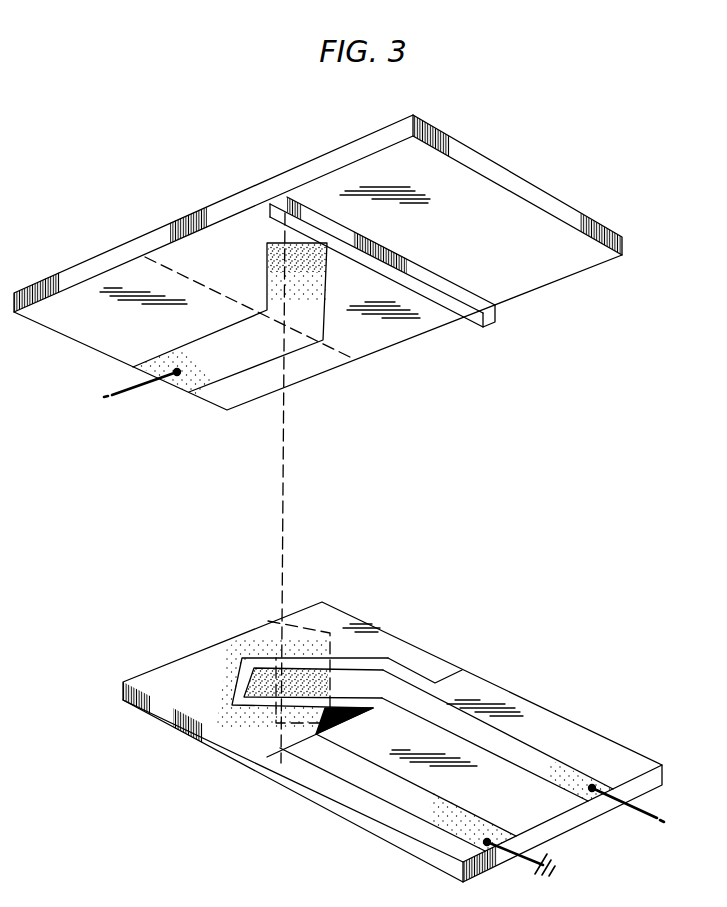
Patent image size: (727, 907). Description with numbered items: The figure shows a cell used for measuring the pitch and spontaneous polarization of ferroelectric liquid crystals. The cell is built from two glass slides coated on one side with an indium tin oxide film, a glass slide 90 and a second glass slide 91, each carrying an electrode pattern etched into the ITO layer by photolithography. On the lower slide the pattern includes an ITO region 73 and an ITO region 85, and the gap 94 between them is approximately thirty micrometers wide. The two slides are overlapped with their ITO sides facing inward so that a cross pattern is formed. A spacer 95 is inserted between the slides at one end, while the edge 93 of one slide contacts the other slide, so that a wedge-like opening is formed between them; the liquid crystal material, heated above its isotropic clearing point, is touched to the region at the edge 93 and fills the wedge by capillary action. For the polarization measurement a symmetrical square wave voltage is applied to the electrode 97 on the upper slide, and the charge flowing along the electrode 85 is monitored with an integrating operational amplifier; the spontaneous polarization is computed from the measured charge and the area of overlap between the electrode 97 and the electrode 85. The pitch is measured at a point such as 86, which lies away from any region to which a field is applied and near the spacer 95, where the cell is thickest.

The ITO region 73 is at (178, 682).
The ITO region 85 is at (543, 762).
The pitch measurement point 86 is at (357, 714).
The glass slide 90 is at (568, 818).
The second glass slide 91 is at (83, 325).
The edge 93 is at (327, 349).
The gap 94 is at (243, 672).
The spacer 95 is at (466, 321).
The electrode 97 is at (177, 386).